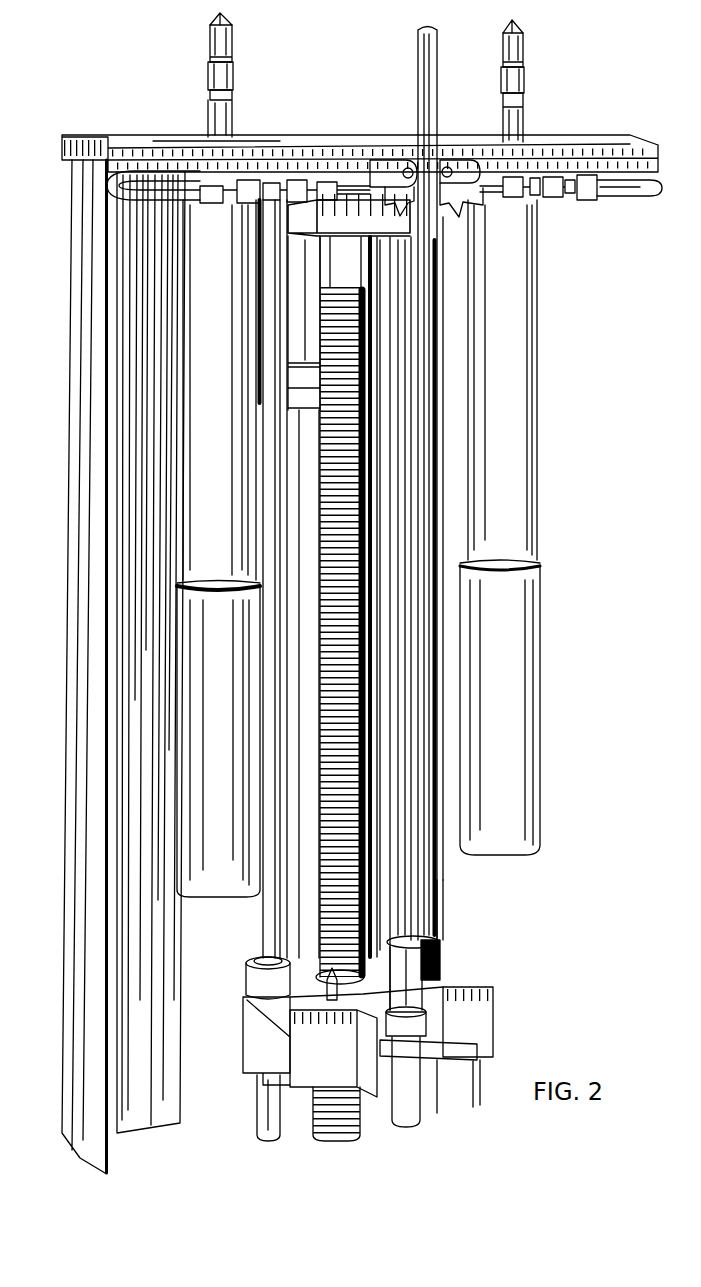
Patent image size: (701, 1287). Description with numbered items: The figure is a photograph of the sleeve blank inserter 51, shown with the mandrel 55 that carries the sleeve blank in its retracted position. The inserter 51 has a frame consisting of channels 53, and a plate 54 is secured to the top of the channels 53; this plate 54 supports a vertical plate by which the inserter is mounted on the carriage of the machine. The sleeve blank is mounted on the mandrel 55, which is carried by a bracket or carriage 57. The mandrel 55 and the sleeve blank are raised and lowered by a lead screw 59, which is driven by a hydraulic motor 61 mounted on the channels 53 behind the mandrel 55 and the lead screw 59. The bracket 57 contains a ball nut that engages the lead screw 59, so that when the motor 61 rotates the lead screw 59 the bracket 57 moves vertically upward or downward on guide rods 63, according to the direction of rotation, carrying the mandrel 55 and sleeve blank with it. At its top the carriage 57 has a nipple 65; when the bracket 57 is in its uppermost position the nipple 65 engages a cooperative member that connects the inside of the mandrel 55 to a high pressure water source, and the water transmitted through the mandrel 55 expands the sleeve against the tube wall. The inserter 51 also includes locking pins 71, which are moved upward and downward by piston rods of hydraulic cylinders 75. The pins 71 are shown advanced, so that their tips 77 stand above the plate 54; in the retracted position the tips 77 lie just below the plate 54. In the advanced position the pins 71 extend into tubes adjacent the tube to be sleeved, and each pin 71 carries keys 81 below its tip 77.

The inserter 51 is at (517, 921).
The channels 53 is at (92, 917).
The plate 54 is at (313, 140).
The mandrel 55 is at (415, 80).
The bracket or carriage 57 is at (487, 1023).
The lead screw 59 is at (317, 902).
The hydraulic motor 61 is at (303, 325).
The guide rods 63 is at (268, 938).
The nipple 65 is at (375, 1030).
The locking pins 71 is at (210, 43).
The hydraulic cylinders 75 is at (200, 440).
The tips 77 is at (225, 17).
The keys 81 is at (232, 78).